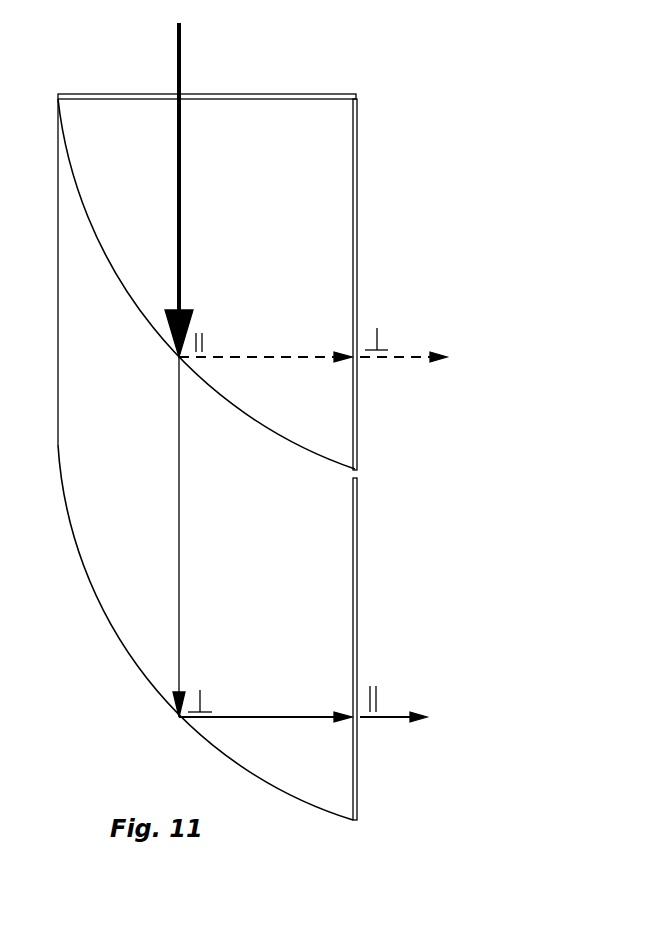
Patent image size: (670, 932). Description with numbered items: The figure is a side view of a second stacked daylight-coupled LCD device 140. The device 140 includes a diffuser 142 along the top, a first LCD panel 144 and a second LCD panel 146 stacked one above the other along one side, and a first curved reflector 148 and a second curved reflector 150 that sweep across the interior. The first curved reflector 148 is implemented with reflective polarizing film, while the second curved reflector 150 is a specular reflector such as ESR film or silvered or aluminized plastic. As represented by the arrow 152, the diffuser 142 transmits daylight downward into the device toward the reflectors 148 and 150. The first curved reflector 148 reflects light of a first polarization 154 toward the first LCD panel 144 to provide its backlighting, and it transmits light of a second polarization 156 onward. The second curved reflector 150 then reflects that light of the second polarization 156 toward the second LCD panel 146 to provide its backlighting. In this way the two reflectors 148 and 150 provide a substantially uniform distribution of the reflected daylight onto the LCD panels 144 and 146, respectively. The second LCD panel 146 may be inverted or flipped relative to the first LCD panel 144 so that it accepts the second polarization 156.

The second stacked daylight-coupled LCD device 140 is at (354, 51).
The diffuser 142 is at (263, 93).
The first LCD panel 144 is at (357, 234).
The second LCD panel 146 is at (357, 614).
The first curved reflector 148 is at (287, 443).
The second curved reflector 150 is at (110, 620).
The arrow 152 is at (177, 45).
The light of a first polarization 154 is at (285, 352).
The light of a second polarization 156 is at (285, 714).